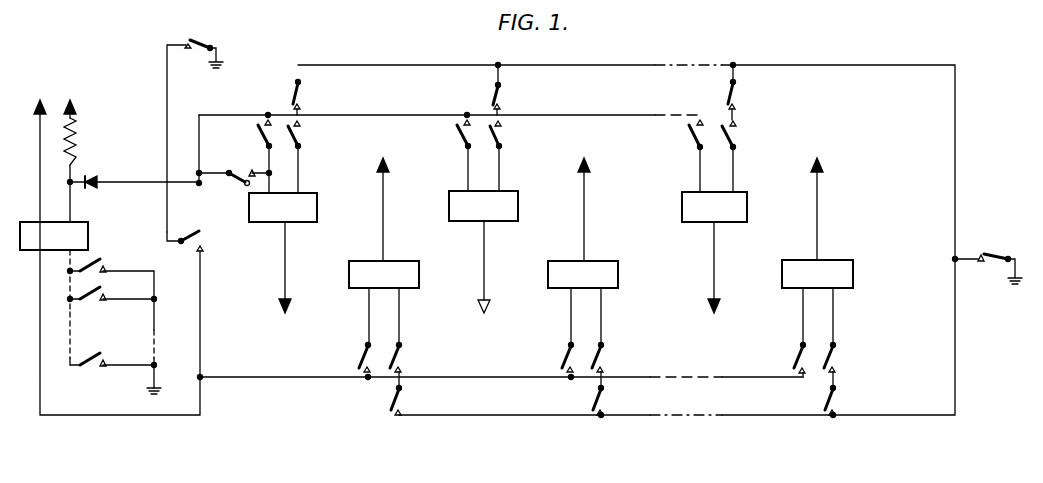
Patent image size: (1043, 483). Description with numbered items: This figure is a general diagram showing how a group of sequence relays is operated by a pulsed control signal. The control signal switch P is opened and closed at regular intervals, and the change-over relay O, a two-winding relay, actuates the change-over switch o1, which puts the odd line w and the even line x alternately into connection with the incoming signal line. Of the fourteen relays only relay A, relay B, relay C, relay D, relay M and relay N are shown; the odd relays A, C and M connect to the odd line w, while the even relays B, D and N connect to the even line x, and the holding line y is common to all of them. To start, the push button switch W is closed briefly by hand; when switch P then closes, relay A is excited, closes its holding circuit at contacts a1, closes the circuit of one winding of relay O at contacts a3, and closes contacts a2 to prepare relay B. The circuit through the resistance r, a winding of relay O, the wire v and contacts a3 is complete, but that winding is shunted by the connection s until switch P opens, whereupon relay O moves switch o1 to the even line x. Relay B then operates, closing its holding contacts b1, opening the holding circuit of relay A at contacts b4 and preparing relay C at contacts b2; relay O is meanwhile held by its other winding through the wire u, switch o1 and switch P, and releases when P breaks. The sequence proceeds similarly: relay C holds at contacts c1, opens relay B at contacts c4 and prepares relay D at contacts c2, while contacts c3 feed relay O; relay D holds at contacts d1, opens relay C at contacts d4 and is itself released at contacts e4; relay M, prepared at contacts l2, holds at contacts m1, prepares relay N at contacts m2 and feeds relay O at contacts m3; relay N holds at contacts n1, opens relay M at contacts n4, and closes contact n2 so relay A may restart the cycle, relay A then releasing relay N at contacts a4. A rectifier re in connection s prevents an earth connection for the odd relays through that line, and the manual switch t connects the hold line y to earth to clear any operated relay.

The holding line y is at (437, 65).
The even line x is at (300, 378).
The odd line w is at (265, 113).
The push button switch W is at (246, 178).
The change-over relay O is at (54, 236).
The wire u is at (41, 269).
The wire v is at (68, 270).
The resistance r is at (76, 141).
The rectifier re is at (134, 195).
The connection s is at (158, 182).
The contacts a3 is at (111, 279).
The contacts c3 is at (112, 322).
The contacts m3 is at (120, 373).
The control signal switch P is at (195, 124).
The change-over switch o1 is at (195, 305).
The contact n2 is at (249, 153).
The contacts b4 is at (309, 98).
The contacts a1 is at (306, 157).
The relay A is at (283, 253).
The relay B is at (384, 251).
The contacts a2 is at (350, 361).
The contacts b1 is at (408, 366).
The contacts c4 is at (407, 401).
The contacts d4 is at (509, 89).
The contacts b2 is at (446, 152).
The contacts c1 is at (506, 156).
The relay C is at (483, 252).
The relay D is at (583, 251).
The contacts c2 is at (550, 361).
The contacts d1 is at (610, 366).
The contacts e4 is at (610, 402).
The contacts n4 is at (745, 92).
The contacts l2 is at (680, 156).
The contacts m1 is at (745, 156).
The relay M is at (714, 252).
The relay N is at (817, 251).
The contacts m2 is at (780, 360).
The contacts n1 is at (842, 366).
The contacts a4 is at (844, 402).
The manual switch t is at (988, 257).